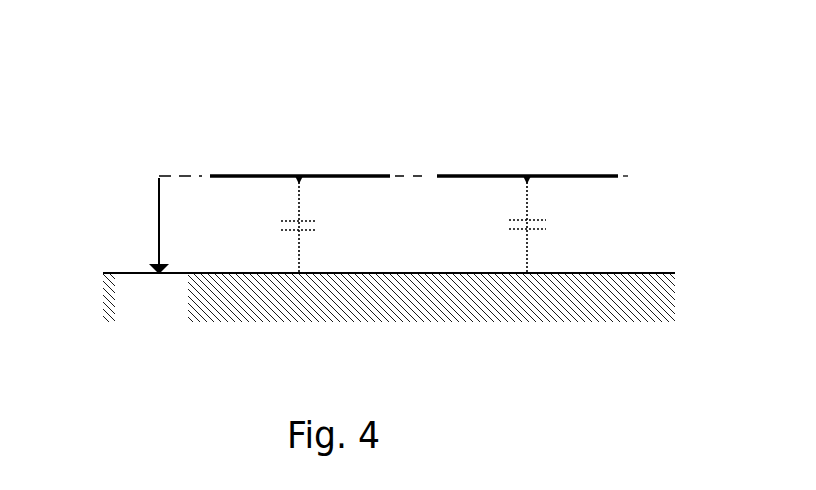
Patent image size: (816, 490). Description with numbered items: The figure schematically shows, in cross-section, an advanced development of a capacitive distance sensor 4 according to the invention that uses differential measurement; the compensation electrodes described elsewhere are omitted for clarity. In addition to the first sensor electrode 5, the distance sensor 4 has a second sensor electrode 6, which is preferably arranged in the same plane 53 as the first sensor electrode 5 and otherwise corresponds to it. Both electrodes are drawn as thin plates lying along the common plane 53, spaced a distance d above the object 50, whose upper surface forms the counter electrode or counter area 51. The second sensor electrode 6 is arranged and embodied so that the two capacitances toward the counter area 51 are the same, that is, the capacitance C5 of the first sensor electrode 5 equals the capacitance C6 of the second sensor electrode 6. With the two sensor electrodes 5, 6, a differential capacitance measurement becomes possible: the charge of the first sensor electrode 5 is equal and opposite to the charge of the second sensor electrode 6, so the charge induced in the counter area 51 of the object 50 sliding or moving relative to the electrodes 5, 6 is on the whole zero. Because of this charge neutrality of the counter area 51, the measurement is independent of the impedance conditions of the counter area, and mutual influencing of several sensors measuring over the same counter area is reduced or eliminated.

The capacitive distance sensor 4 is at (539, 39).
The first sensor electrode 5 is at (250, 112).
The second sensor electrode 6 is at (454, 113).
The object 50 is at (160, 317).
The counter area 51 is at (412, 254).
The plane 53 is at (340, 141).
The capacitance of the first sensor electrode C5 is at (260, 225).
The capacitance of the second sensor electrode C6 is at (489, 225).
The distance between electrodes and surface d is at (124, 226).